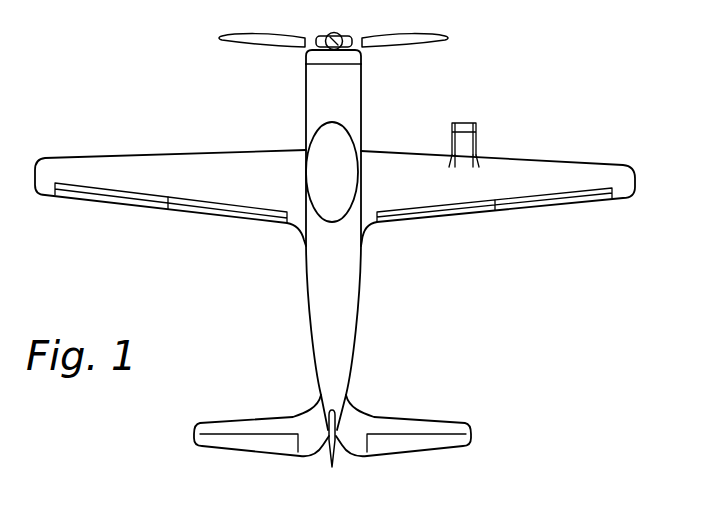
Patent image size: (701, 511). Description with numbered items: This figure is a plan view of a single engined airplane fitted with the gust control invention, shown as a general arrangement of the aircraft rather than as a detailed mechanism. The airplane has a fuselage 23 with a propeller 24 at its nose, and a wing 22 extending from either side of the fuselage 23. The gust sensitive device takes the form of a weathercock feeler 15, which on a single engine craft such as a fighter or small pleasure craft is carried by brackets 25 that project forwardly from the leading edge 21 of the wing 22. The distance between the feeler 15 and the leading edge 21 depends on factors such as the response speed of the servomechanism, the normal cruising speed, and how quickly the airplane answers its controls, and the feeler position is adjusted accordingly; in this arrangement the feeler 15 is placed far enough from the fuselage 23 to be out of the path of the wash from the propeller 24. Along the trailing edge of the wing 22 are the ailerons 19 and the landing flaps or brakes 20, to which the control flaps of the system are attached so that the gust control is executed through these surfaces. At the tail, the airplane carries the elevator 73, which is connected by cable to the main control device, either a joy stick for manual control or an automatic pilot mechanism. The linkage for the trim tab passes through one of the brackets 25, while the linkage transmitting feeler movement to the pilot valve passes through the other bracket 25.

The weathercock feeler 15 is at (462, 119).
The ailerons 19 is at (120, 196).
The landing flaps or brakes 20 is at (225, 206).
The leading edge 21 is at (508, 158).
The wing 22 is at (170, 170).
The fuselage 23 is at (307, 97).
The propeller 24 is at (446, 41).
The brackets 25 is at (452, 138).
The elevator 73 is at (258, 449).